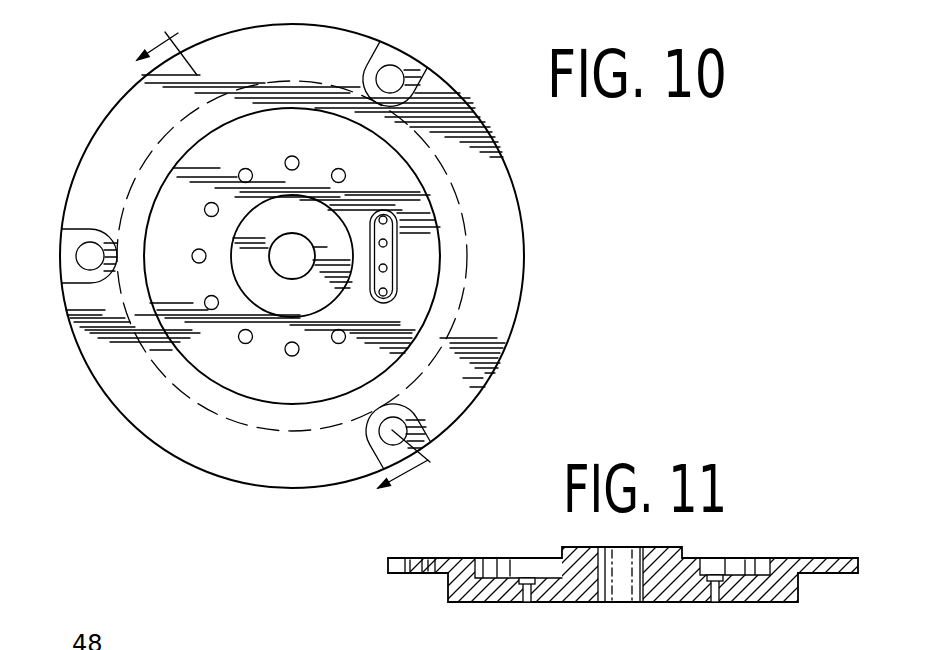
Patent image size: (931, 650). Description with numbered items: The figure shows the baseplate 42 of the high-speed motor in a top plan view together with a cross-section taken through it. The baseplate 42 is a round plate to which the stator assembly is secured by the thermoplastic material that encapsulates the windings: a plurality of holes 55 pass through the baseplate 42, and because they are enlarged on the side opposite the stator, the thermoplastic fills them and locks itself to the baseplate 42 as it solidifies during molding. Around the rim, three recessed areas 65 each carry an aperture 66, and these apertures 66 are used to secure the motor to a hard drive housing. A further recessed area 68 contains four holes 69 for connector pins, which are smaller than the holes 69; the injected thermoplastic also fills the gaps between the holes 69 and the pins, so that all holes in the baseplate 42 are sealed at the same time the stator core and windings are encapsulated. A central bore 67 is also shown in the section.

In FIG. 10, the baseplate 42 is at (530, 251).
In FIG. 11, the baseplate 42 is at (673, 604).
In FIG. 10, the holes 55 is at (343, 173).
In FIG. 11, the holes 55 is at (526, 604).
In FIG. 10, the recessed areas 65 is at (428, 64).
In FIG. 11, the recessed areas 65 is at (392, 562).
In FIG. 10, the apertures 66 is at (390, 72).
In FIG. 11, the apertures 66 is at (420, 573).
In FIG. 11, the central bore 67 is at (622, 588).
In FIG. 10, the recessed area 68 is at (397, 248).
In FIG. 10, the holes 69 is at (387, 292).